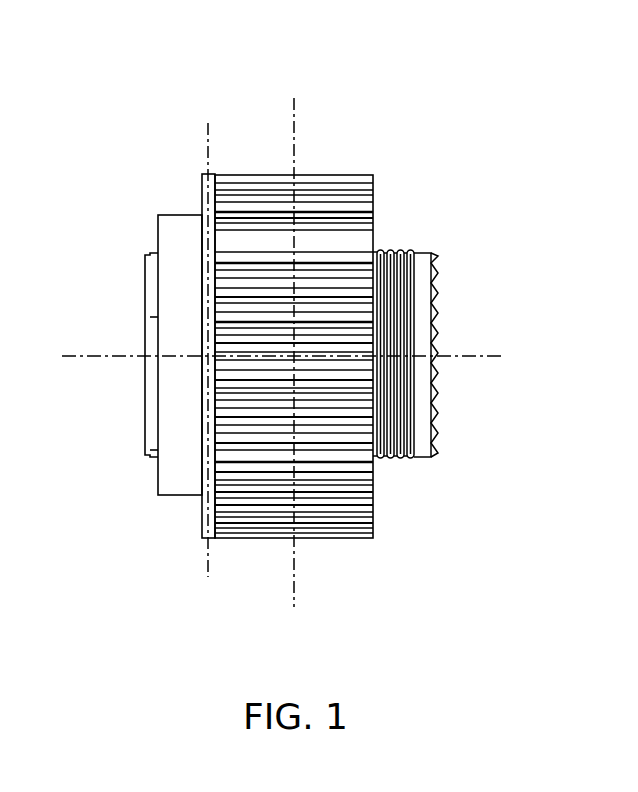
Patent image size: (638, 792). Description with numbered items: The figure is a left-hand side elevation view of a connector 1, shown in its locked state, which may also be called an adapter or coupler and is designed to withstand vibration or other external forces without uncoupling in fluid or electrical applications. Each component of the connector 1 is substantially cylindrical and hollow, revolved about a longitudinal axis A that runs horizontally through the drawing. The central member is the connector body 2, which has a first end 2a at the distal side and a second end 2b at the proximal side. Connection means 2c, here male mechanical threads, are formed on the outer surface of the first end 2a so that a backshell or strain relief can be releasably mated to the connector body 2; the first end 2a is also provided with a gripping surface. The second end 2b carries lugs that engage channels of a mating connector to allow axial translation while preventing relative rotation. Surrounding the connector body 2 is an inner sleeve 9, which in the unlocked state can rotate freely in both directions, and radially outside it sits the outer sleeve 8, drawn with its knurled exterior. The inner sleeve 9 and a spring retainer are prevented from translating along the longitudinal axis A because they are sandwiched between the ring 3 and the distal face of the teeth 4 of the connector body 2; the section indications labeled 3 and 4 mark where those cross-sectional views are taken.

The connector 1 is at (269, 273).
The connector body 2 is at (116, 368).
The second end 2b is at (146, 451).
The first end 2a is at (430, 252).
The connection means 2c is at (390, 250).
The ring 3 is at (208, 130).
The teeth 4 is at (294, 98).
The outer sleeve 8 is at (265, 178).
The inner sleeve 9 is at (180, 214).
The longitudinal axis A is at (295, 356).